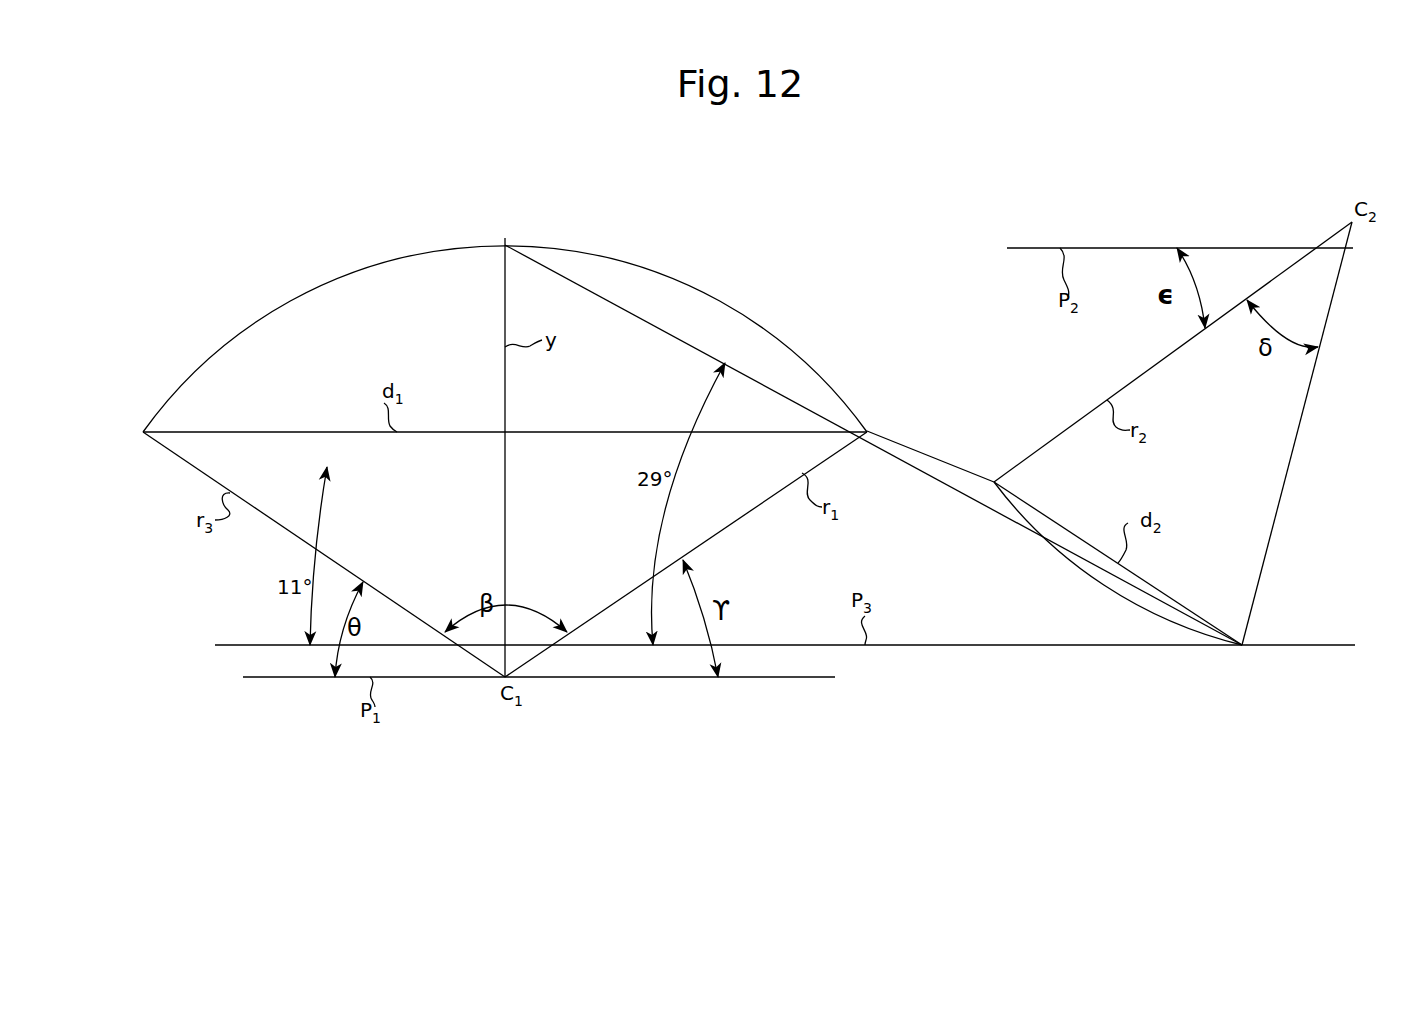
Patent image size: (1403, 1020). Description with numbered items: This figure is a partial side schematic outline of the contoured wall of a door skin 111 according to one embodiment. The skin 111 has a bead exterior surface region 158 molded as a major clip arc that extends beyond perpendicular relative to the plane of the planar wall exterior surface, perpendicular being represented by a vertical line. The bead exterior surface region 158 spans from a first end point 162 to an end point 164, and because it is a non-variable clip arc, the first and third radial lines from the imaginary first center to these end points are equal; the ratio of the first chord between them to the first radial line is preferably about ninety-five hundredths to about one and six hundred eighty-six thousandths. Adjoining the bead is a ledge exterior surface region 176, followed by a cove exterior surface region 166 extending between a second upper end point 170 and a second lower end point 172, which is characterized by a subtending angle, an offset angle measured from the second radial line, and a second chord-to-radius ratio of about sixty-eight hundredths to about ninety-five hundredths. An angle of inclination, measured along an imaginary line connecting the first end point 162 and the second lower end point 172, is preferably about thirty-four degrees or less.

The skin 111 is at (635, 240).
The bead exterior surface region 158 is at (708, 293).
The first end point 162 is at (143, 432).
The end point 164 is at (867, 431).
The cove exterior surface region 166 is at (1087, 576).
The second upper end point 170 is at (994, 482).
The second lower end point 172 is at (1242, 647).
The ledge exterior surface region 176 is at (953, 464).